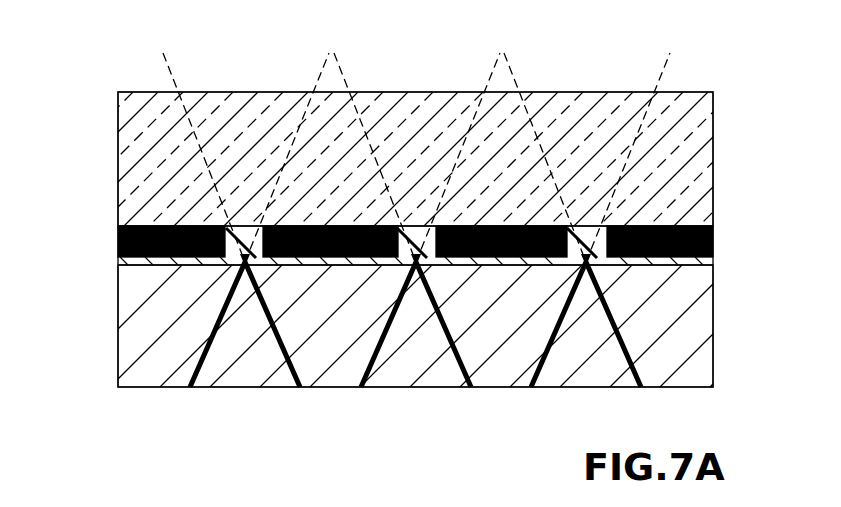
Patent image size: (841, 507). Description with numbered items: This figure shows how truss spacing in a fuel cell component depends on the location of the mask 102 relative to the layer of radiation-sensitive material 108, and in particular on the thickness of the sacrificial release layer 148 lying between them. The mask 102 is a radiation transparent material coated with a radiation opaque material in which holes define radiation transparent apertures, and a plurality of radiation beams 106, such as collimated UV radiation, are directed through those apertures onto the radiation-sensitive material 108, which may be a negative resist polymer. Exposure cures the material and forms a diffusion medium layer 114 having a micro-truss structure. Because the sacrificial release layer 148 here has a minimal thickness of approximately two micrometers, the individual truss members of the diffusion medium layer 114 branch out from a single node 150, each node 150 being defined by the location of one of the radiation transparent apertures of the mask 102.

The mask 102 is at (713, 145).
The sacrificial release layer 148 is at (713, 258).
The radiation-sensitive material 108 is at (713, 318).
The radiation beams 106 is at (322, 82).
The node 150 is at (242, 266).
The diffusion medium layer 114 is at (153, 332).